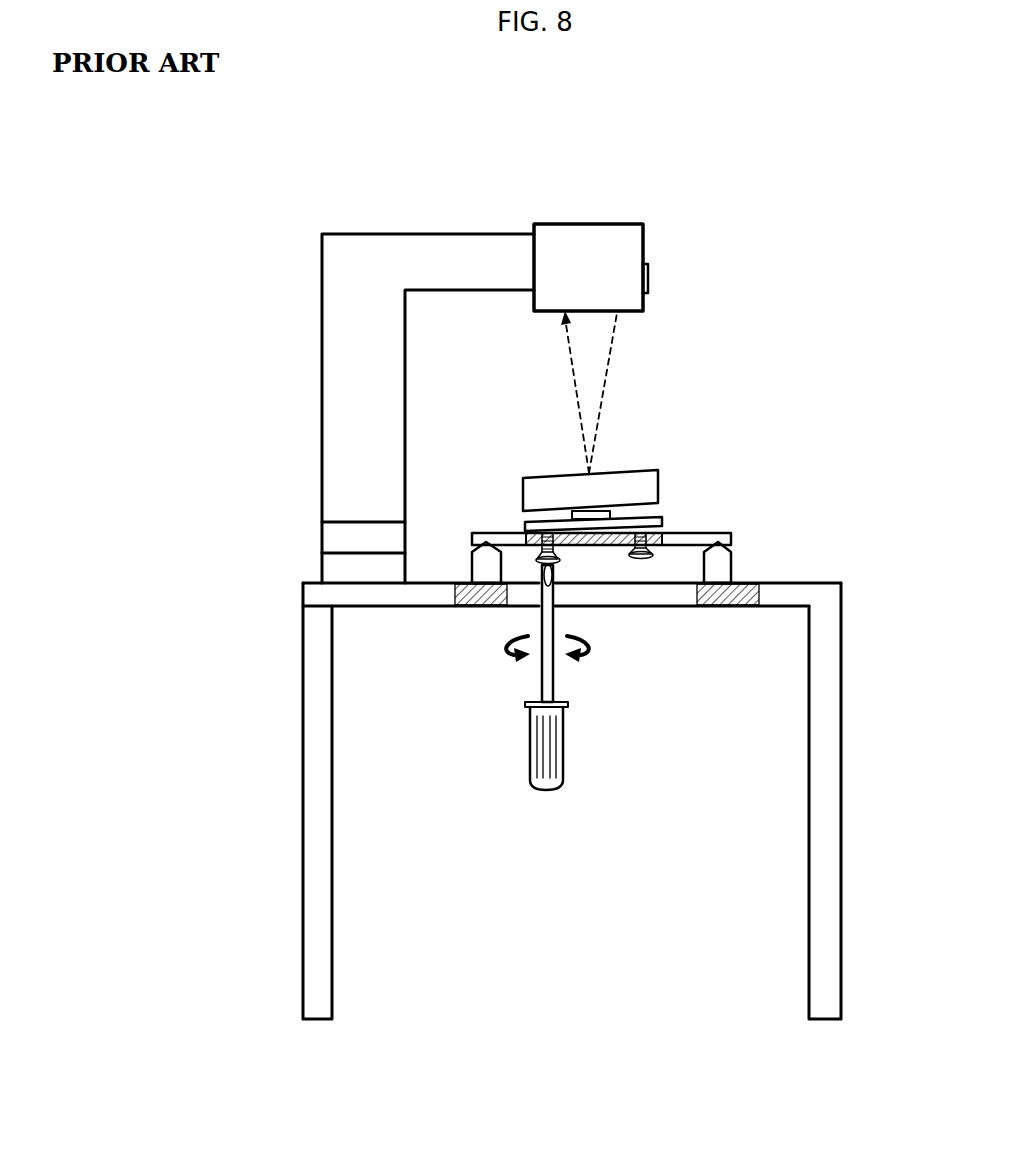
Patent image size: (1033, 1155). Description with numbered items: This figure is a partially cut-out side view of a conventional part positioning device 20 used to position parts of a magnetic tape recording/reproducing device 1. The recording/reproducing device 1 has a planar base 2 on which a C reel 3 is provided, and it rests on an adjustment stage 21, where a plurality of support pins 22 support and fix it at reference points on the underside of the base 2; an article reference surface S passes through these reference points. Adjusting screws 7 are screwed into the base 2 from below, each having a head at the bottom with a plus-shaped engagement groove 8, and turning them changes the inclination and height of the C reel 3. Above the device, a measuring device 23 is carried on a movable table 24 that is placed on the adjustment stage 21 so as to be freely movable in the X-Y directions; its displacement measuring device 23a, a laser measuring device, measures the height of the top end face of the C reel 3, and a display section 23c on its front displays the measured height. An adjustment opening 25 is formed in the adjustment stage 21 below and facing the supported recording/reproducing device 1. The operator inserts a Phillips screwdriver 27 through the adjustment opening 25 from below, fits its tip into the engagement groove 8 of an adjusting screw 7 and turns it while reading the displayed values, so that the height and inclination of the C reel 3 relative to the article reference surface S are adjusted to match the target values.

The magnetic tape recording/reproducing device 1 is at (701, 532).
The planar base 2 is at (731, 535).
The C reel 3 is at (659, 470).
The adjusting screw 7 is at (560, 557).
The engagement groove 8 is at (555, 563).
The article reference surface S is at (503, 546).
The part positioning device 20 is at (745, 336).
The adjustment stage 21 is at (841, 583).
The support pin 22 is at (473, 570).
The measuring device 23 is at (552, 222).
The displacement measuring device 23a is at (607, 238).
The display section 23c is at (650, 274).
The movable table 24 is at (347, 519).
The adjustment opening 25 is at (633, 598).
The Phillips screwdriver 27 is at (549, 785).